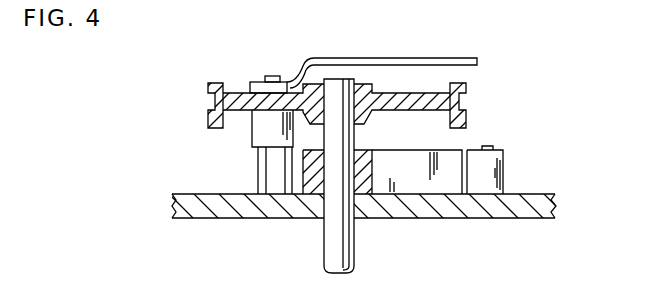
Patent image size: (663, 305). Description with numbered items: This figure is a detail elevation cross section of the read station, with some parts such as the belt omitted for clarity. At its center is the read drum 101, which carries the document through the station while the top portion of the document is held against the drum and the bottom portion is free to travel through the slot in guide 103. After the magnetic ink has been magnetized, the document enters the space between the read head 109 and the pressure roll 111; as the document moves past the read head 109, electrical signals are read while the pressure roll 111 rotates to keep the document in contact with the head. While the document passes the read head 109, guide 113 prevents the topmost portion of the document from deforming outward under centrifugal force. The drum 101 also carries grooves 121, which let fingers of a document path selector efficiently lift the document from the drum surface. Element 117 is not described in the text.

The read drum 101 is at (208, 119).
The guide 103 is at (312, 196).
The read head 109 is at (432, 196).
The pressure roll 111 is at (505, 172).
The guide 113 is at (468, 57).
The support block 117 is at (257, 133).
The grooves 121 is at (209, 101).